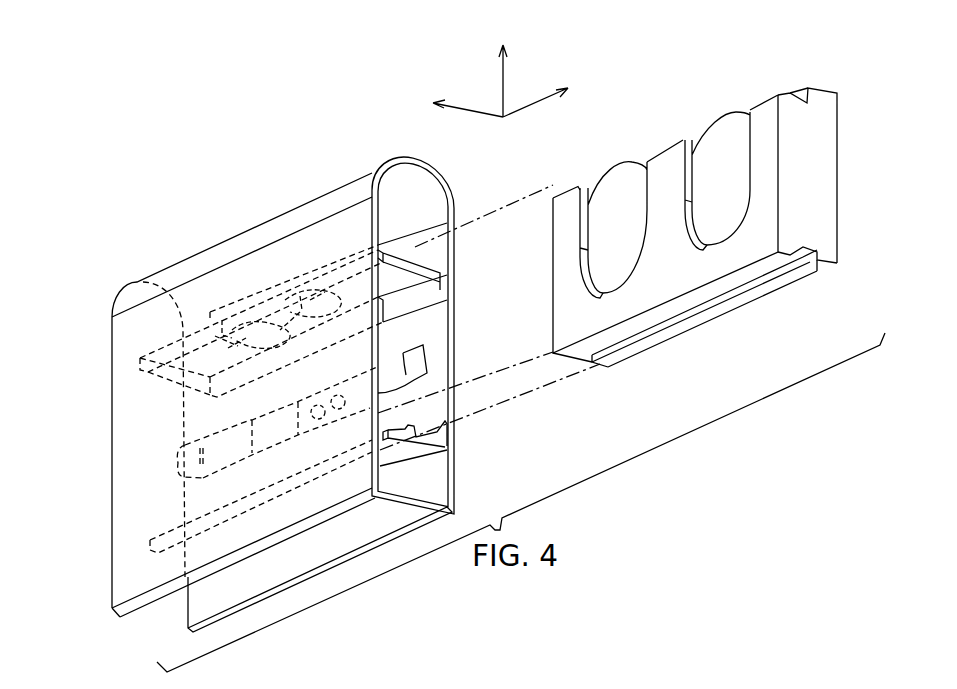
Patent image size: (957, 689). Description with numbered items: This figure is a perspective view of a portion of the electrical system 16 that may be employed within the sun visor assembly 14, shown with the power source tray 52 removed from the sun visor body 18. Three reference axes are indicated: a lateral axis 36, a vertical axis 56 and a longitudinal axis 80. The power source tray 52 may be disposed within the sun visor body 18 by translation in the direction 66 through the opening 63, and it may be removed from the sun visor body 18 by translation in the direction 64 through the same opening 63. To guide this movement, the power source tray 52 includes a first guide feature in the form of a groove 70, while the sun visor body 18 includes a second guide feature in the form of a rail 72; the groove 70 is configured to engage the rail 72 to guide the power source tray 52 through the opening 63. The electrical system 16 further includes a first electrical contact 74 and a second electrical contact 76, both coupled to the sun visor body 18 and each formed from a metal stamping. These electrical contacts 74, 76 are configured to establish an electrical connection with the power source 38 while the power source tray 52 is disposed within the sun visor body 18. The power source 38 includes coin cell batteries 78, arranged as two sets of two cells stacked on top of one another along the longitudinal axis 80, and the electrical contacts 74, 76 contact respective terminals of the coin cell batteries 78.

The sun visor assembly 14 is at (318, 126).
The electrical system 16 is at (486, 355).
The sun visor body 18 is at (405, 160).
The lateral axis 36 is at (537, 105).
The power source 38 is at (665, 111).
The power source tray 52 is at (822, 210).
The vertical axis 56 is at (501, 88).
The opening 63 is at (430, 326).
The direction 64 is at (867, 162).
The direction 66 is at (501, 314).
The groove 70 is at (722, 298).
The rail 72 is at (413, 436).
The first electrical contact 74 is at (408, 370).
The second electrical contact 76 is at (330, 280).
The coin cell batteries 78 is at (733, 142).
The longitudinal axis 80 is at (470, 112).